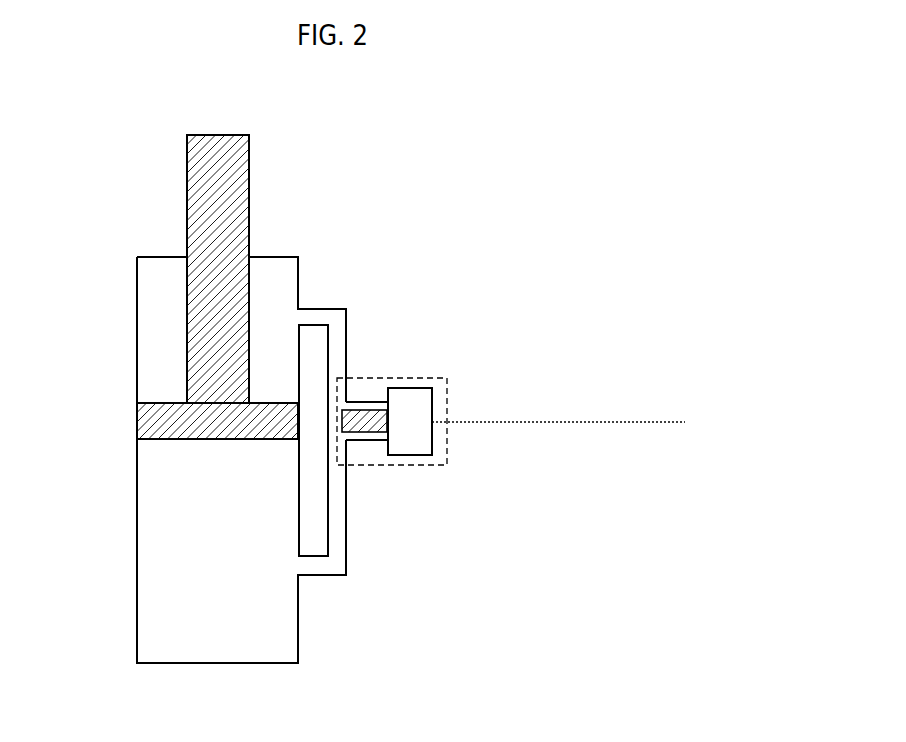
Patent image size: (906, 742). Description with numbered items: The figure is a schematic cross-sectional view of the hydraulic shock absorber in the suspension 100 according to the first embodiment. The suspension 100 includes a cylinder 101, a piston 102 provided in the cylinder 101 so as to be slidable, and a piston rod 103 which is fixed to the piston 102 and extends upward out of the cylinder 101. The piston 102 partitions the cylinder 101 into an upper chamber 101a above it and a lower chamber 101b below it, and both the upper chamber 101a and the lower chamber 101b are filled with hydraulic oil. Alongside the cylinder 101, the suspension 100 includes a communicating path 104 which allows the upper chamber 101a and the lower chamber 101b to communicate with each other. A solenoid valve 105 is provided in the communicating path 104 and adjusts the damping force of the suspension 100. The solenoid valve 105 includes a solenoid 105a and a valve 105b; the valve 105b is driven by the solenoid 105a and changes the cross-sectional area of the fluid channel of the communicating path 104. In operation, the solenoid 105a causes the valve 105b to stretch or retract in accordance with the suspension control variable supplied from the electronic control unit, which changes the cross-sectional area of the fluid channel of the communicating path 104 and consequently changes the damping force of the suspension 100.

The suspension 100 is at (425, 153).
The cylinder 101 is at (281, 257).
The upper chamber 101a is at (145, 336).
The lower chamber 101b is at (145, 534).
The piston 102 is at (147, 420).
The piston rod 103 is at (222, 190).
The communicating path 104 is at (347, 321).
The solenoid valve 105 is at (405, 378).
The solenoid 105a is at (433, 442).
The valve 105b is at (366, 424).